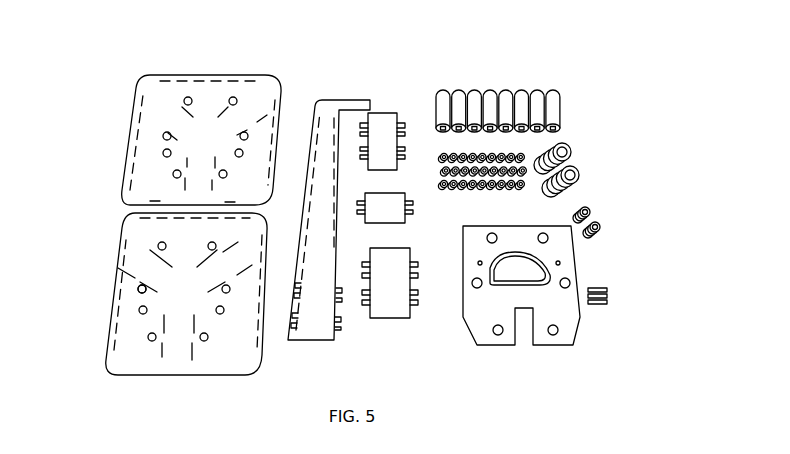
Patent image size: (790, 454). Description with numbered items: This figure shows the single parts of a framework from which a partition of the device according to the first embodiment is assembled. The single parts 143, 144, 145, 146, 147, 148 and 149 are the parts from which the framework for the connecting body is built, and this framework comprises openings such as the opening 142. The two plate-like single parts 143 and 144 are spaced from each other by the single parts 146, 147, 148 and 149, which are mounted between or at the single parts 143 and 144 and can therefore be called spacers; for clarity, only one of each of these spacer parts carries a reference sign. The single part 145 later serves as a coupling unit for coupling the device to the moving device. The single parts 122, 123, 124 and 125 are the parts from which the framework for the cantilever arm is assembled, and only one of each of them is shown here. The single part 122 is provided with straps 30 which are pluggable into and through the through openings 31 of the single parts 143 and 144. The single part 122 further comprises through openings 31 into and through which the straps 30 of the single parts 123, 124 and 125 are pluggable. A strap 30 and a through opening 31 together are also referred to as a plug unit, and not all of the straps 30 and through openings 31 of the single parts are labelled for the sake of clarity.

The strap 30 is at (336, 340).
The through opening 31 is at (190, 75).
The single part 122 is at (326, 106).
The single part 123 is at (380, 114).
The single part 124 is at (409, 212).
The single part 125 is at (374, 319).
The opening 142 is at (140, 290).
The single part 143 is at (212, 80).
The single part 144 is at (206, 378).
The single part 145 is at (572, 268).
The single part 146 is at (554, 100).
The single part 147 is at (573, 150).
The single part 148 is at (476, 190).
The single part 149 is at (598, 222).